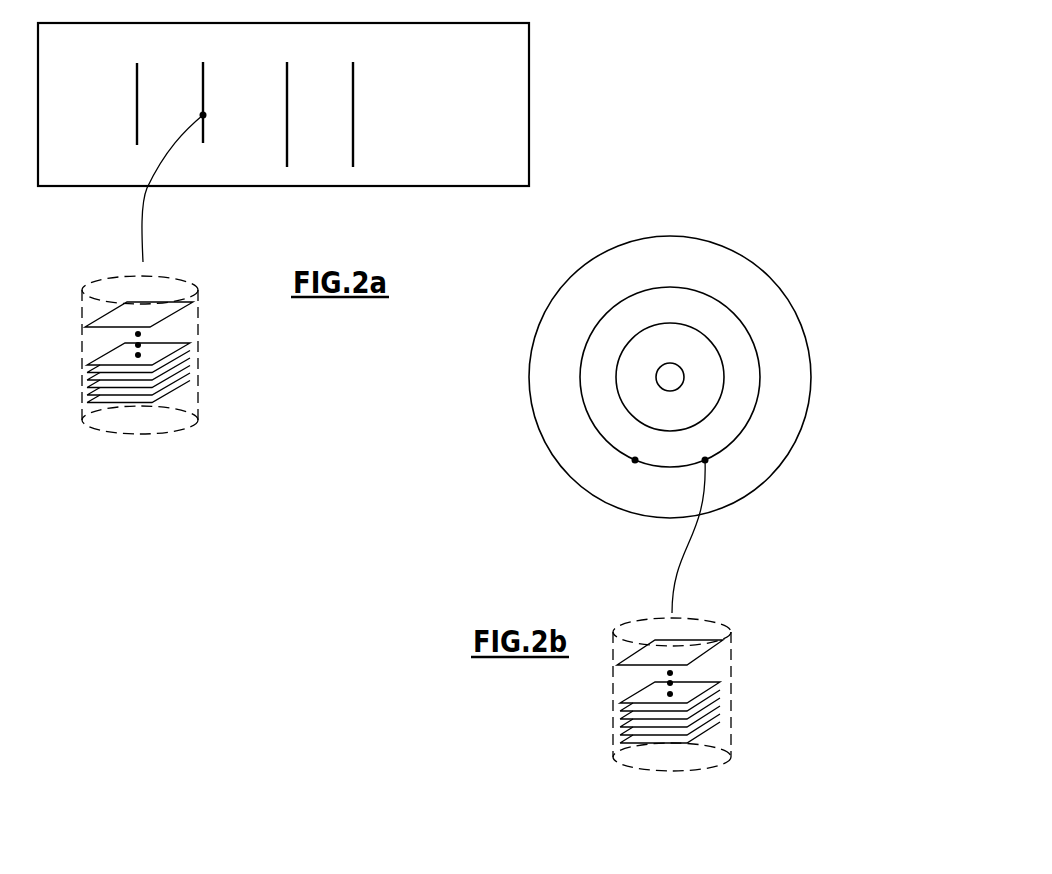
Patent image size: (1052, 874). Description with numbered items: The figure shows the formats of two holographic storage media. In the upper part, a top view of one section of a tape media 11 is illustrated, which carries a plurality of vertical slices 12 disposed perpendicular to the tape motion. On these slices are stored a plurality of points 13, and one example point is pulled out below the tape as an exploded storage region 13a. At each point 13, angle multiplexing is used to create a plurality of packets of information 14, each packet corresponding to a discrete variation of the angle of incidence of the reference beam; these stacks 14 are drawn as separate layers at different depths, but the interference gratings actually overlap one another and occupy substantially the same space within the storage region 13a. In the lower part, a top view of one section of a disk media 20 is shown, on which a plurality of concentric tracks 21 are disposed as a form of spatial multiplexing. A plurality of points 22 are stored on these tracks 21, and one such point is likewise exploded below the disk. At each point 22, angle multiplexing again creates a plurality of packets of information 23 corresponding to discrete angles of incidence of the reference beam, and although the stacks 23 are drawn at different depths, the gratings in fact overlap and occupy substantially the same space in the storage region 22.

In FIG. 2a, the tape media 11 is at (211, 35).
In FIG. 2a, the vertical slices 12 is at (203, 78).
In FIG. 2a, the points 13 is at (203, 143).
In FIG. 2a, the point (storage region) 13a is at (203, 115).
In FIG. 2a, the packets of information 14 is at (172, 314).
In FIG. 2b, the disk media 20 is at (722, 246).
In FIG. 2b, the concentric tracks 21 is at (757, 352).
In FIG. 2b, the points (storage region) 22 is at (635, 460).
In FIG. 2b, the packets of information 23 is at (702, 650).